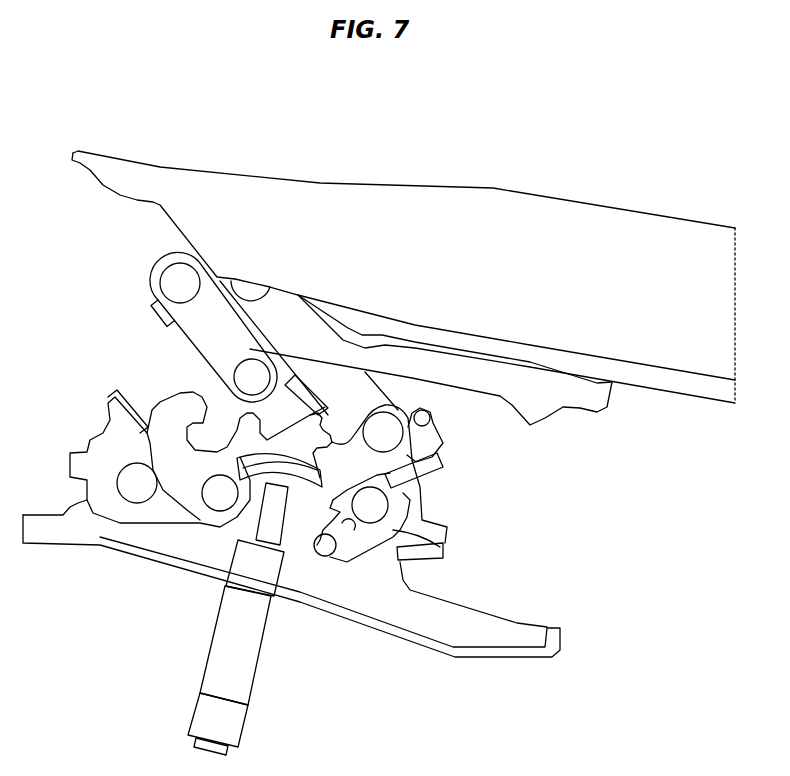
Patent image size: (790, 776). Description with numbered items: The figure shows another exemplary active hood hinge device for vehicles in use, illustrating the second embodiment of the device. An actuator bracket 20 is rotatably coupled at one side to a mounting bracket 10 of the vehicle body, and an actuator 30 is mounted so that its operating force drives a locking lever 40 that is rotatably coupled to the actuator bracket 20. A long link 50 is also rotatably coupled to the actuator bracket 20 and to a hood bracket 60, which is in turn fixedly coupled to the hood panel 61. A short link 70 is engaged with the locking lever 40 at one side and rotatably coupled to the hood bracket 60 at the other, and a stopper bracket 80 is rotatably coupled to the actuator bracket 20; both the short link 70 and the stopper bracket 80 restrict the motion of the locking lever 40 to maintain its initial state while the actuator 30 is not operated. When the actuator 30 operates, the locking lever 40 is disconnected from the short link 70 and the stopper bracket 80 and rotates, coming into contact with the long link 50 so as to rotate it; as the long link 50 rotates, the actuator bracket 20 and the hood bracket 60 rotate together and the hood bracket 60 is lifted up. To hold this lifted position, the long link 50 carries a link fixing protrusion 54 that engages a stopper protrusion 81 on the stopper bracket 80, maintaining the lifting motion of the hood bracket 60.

The mounting bracket 10 is at (220, 550).
The actuator bracket 20 is at (290, 517).
The actuator 30 is at (237, 683).
The locking lever 40 is at (180, 477).
The long link 50 is at (336, 385).
The link fixing protrusion 54 is at (430, 447).
The hood bracket 60 is at (597, 398).
The hood panel 61 is at (548, 217).
The short link 70 is at (207, 333).
The stopper bracket 80 is at (442, 555).
The stopper protrusion 81 is at (427, 477).